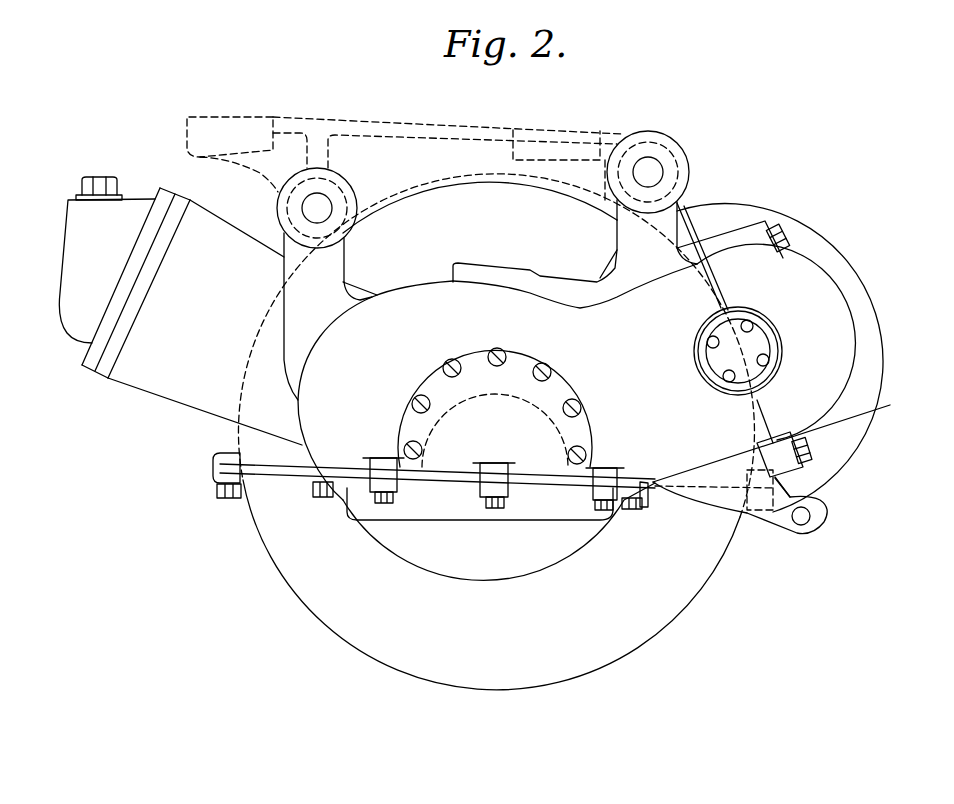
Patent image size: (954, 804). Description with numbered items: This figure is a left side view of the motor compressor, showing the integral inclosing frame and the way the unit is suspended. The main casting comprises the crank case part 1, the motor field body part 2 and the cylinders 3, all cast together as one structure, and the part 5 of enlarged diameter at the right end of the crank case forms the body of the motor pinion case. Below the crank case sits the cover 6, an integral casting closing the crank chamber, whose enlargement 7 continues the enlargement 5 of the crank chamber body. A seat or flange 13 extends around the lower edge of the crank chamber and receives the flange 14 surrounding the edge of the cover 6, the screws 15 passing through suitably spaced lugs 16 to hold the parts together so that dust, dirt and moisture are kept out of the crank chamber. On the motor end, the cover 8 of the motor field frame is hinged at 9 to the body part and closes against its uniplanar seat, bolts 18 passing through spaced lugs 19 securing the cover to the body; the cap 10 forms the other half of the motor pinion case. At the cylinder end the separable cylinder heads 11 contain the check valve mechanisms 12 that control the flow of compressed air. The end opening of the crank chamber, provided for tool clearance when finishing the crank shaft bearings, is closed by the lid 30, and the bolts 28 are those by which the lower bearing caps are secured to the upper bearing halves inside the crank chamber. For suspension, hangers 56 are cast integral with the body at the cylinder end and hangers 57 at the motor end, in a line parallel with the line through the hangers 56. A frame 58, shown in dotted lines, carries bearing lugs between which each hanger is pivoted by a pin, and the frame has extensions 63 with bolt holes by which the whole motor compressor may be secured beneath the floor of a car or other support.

The crank case part 1 is at (543, 292).
The motor field body part 2 is at (750, 522).
The cylinders 3 is at (166, 368).
The part of enlarged diameter 5 is at (258, 434).
The cover for the crank chamber 6 is at (511, 558).
The enlargement 7 is at (635, 628).
The cover of the motor field frame 8 is at (884, 329).
The hinge 9 is at (803, 517).
The cap 10 is at (813, 327).
The cylinder heads 11 is at (88, 357).
The check valve mechanisms 12 is at (86, 223).
The seat or flange 13 is at (230, 466).
The flange 14 is at (227, 481).
The screws 15 is at (228, 500).
The lugs 16 is at (220, 481).
The bolts 18 is at (787, 228).
The lugs 19 is at (754, 230).
The bolts 28 is at (567, 391).
The lid 30 is at (554, 380).
The hangers 56 is at (356, 202).
The hangers 57 is at (690, 164).
The frame 58 is at (378, 124).
The extensions 63 is at (223, 128).